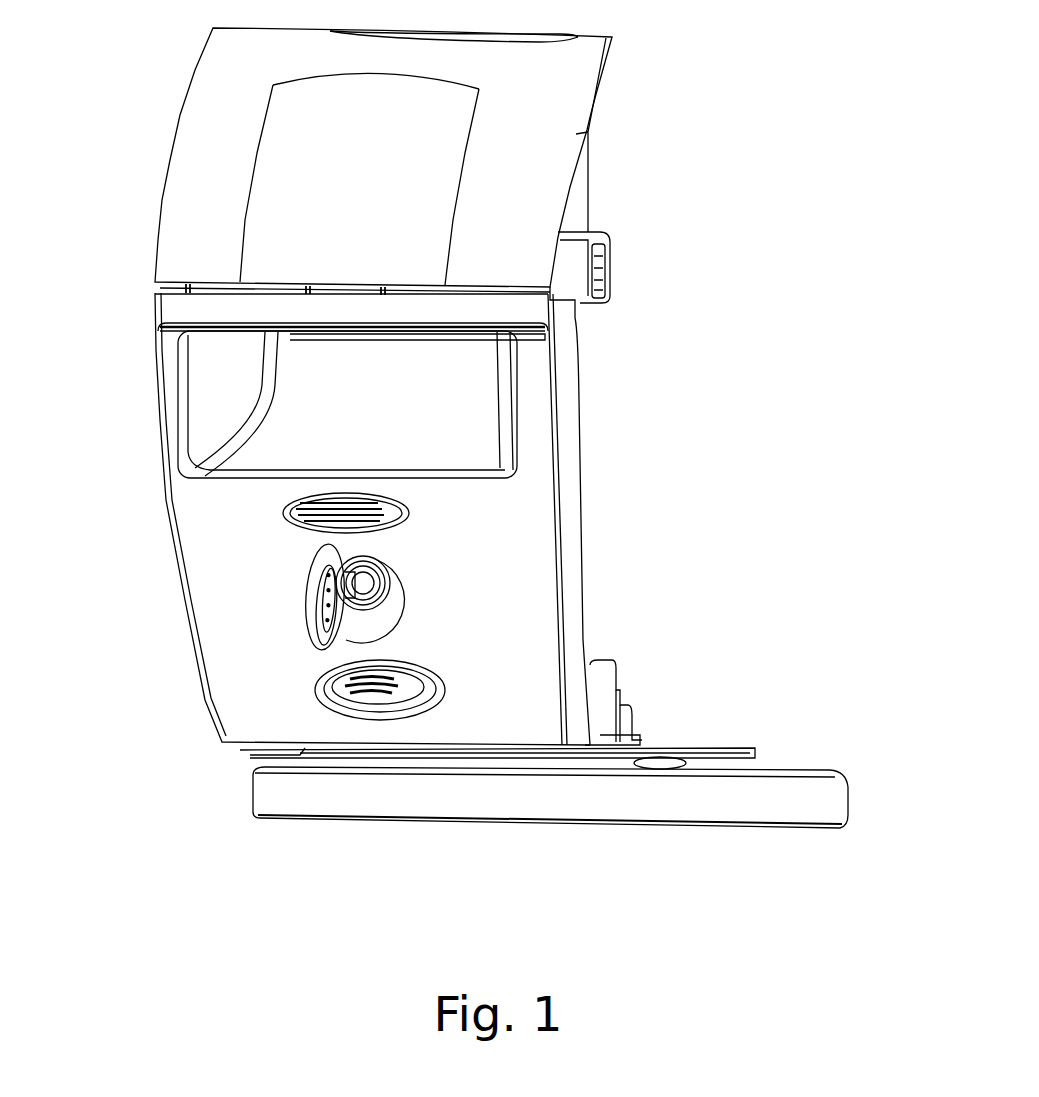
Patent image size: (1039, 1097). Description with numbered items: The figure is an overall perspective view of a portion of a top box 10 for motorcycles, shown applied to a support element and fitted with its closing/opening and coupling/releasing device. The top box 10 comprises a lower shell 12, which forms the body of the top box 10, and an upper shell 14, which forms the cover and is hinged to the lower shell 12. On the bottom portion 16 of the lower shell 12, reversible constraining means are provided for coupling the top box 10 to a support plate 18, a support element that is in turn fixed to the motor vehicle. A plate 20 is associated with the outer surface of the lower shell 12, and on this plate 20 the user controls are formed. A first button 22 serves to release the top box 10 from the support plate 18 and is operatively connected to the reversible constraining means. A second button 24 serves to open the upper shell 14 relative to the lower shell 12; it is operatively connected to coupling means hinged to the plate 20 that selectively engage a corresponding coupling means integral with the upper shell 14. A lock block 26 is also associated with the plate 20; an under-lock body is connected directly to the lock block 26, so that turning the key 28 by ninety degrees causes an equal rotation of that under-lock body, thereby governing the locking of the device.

The top box 10 is at (136, 402).
The lower shell 12 is at (190, 685).
The upper shell 14 is at (597, 88).
The bottom portion 16 is at (725, 747).
The support plate 18 is at (852, 792).
The plate 20 is at (530, 646).
The first button 22 is at (398, 692).
The second button 24 is at (410, 513).
The lock block 26 is at (382, 568).
The key 28 is at (313, 598).